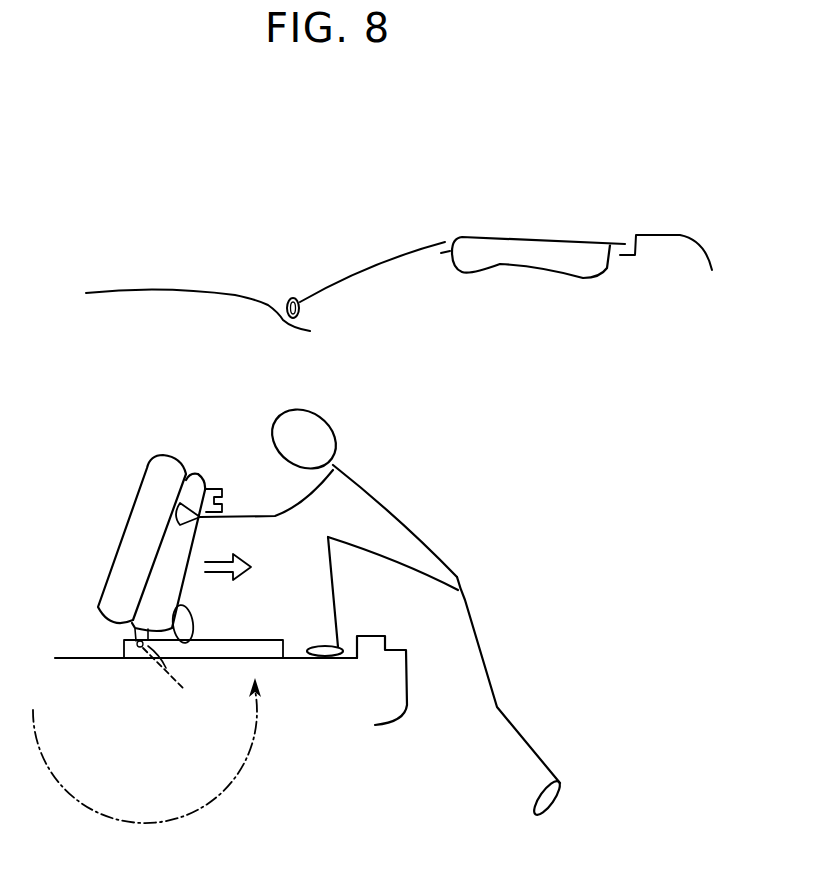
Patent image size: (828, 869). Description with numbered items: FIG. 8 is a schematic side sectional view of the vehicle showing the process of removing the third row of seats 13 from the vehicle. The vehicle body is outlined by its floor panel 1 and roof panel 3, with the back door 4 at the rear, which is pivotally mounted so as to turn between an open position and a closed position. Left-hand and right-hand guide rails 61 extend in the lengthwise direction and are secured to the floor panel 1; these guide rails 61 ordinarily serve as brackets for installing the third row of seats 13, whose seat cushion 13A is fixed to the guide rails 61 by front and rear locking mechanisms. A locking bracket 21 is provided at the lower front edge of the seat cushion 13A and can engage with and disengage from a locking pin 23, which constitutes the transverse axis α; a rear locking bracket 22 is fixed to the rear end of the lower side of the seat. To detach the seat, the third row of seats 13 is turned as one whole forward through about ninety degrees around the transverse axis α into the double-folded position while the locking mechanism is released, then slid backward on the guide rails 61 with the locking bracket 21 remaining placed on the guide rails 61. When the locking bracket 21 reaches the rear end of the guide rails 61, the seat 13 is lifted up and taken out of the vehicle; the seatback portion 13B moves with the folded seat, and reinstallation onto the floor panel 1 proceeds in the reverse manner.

The floor panel 1 is at (82, 656).
The roof panel 3 is at (165, 290).
The back door 4 is at (410, 248).
The third row of seats 13 is at (142, 528).
The seat cushion 13A is at (175, 582).
The second airbag portion 13B is at (153, 488).
The locking bracket 21 is at (187, 632).
The rear locking bracket 22 is at (218, 489).
The locking pin 23 is at (138, 648).
The guide rails 61 is at (260, 650).